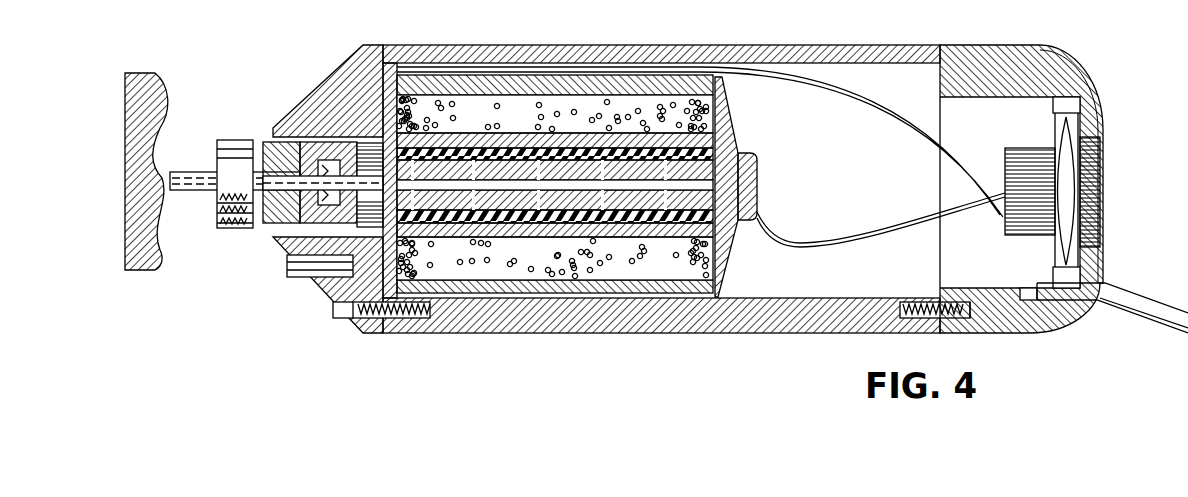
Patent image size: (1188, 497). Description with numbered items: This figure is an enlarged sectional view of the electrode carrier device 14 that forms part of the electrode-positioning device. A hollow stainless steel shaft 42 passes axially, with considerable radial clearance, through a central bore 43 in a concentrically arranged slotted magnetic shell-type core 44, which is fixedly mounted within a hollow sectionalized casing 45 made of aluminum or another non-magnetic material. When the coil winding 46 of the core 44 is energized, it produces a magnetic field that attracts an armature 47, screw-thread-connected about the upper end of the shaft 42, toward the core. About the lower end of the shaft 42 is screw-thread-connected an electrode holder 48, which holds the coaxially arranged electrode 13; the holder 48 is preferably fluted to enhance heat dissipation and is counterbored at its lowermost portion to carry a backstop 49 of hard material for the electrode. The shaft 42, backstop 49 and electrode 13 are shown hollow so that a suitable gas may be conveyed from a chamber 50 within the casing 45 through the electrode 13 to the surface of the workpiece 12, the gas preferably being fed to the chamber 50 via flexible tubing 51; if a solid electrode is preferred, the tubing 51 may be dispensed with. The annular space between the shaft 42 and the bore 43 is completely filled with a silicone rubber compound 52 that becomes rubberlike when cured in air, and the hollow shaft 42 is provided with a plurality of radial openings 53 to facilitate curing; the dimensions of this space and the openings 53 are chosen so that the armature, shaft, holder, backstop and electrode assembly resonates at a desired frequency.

The workpiece 12 is at (158, 84).
The electrode 13 is at (198, 172).
The electrode carrier device 14 is at (905, 47).
The hollow stainless steel shaft 42 is at (410, 268).
The central bore 43 is at (554, 180).
The slotted magnetic shell-type core 44 is at (384, 92).
The hollow sectionalized casing 45 is at (622, 323).
The coil winding 46 is at (533, 257).
The armature 47 is at (730, 142).
The electrode holder 48 is at (257, 230).
The backstop 49 is at (305, 160).
The chamber 50 is at (923, 275).
The flexible tubing 51 is at (1134, 296).
The silicone rubber compound 52 is at (523, 146).
The radial openings 53 is at (647, 147).